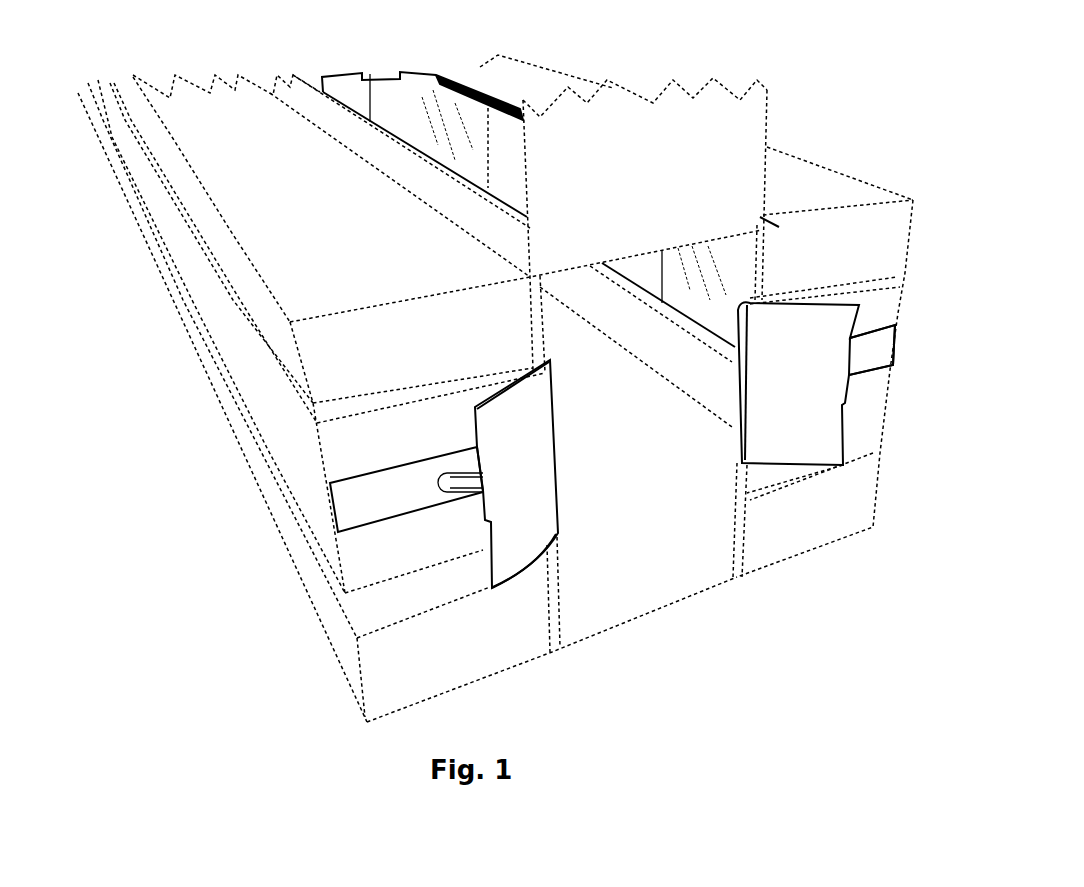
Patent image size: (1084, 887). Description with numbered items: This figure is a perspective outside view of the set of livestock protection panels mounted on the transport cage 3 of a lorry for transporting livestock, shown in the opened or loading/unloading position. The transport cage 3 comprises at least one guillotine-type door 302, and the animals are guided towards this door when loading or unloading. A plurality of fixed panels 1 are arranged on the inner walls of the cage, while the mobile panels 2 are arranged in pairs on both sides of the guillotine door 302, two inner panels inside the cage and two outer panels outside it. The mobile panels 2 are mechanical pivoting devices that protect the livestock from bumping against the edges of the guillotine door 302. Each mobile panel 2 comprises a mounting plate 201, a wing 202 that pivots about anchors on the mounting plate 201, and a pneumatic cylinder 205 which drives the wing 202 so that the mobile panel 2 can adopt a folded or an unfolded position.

The fixed panels 1 is at (412, 88).
The mobile panels 2 is at (517, 563).
The transport cage 3 is at (237, 580).
The mounting plate 201 is at (345, 517).
The wing 202 is at (752, 448).
The pneumatic cylinder 205 is at (447, 482).
The guillotine-type door 302 is at (716, 163).